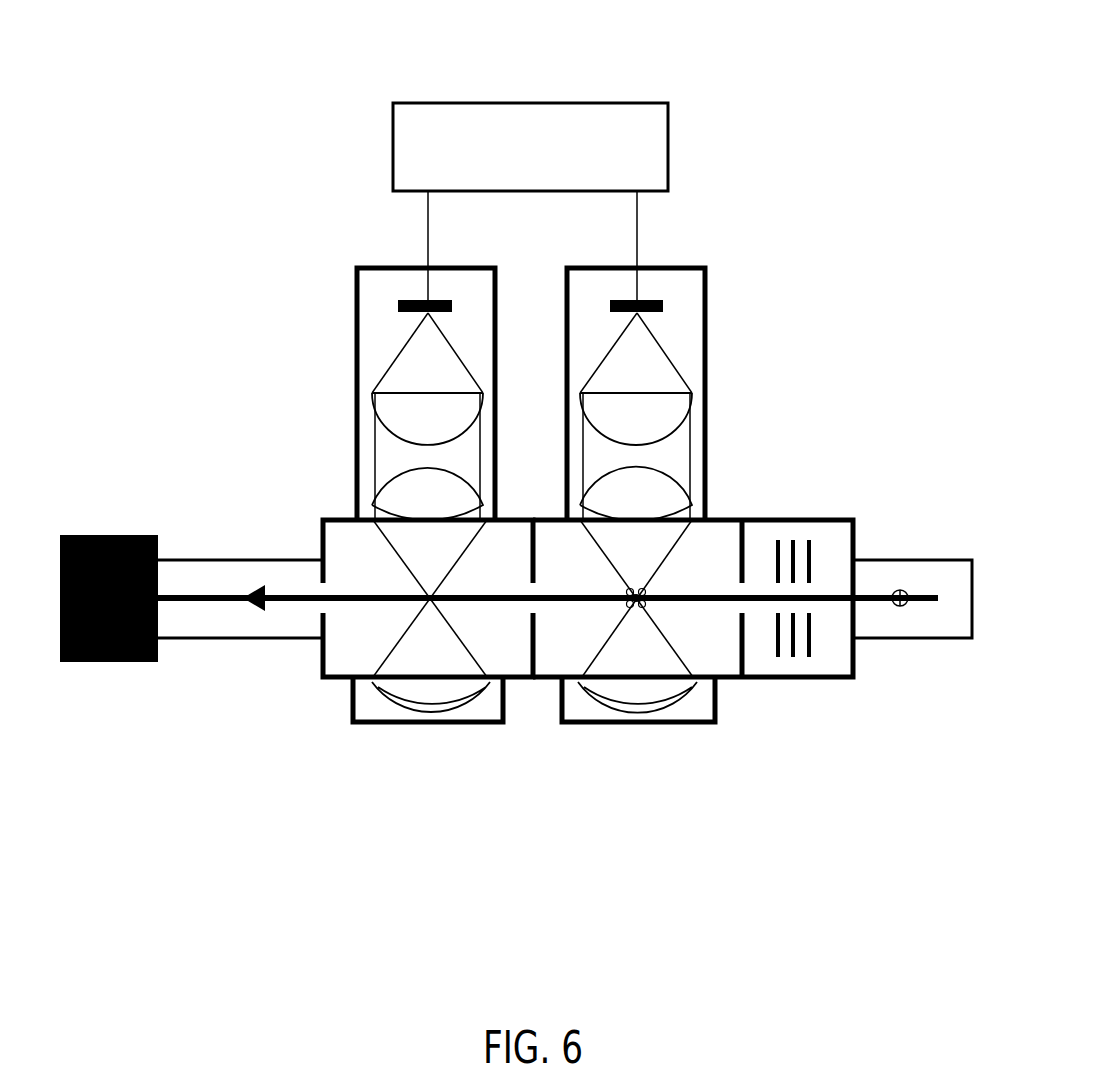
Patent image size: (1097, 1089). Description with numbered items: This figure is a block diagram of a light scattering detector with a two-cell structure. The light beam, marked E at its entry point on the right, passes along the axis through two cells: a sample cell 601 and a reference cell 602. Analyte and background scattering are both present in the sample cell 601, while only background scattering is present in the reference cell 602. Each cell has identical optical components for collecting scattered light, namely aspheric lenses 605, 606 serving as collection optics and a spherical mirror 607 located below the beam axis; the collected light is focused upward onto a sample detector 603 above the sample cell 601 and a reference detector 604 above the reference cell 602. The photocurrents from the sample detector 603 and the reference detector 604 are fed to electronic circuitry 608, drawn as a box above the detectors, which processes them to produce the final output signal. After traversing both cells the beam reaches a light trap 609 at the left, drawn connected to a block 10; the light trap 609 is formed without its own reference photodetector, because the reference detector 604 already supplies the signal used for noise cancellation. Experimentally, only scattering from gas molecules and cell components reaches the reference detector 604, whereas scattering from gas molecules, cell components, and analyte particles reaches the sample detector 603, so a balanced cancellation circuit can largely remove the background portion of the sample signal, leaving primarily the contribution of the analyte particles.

The controller 10 is at (100, 535).
The light trap 609 is at (242, 563).
The electronic circuitry 608 is at (632, 115).
The reference detector 604 is at (410, 303).
The sample detector 603 is at (650, 308).
The aspheric lens 606 is at (387, 408).
The aspheric lens 605 is at (383, 507).
The reference cell 602 is at (342, 662).
The sample cell 601 is at (723, 660).
The spherical mirror 607 is at (428, 710).
The electron beam / emission point E is at (903, 618).